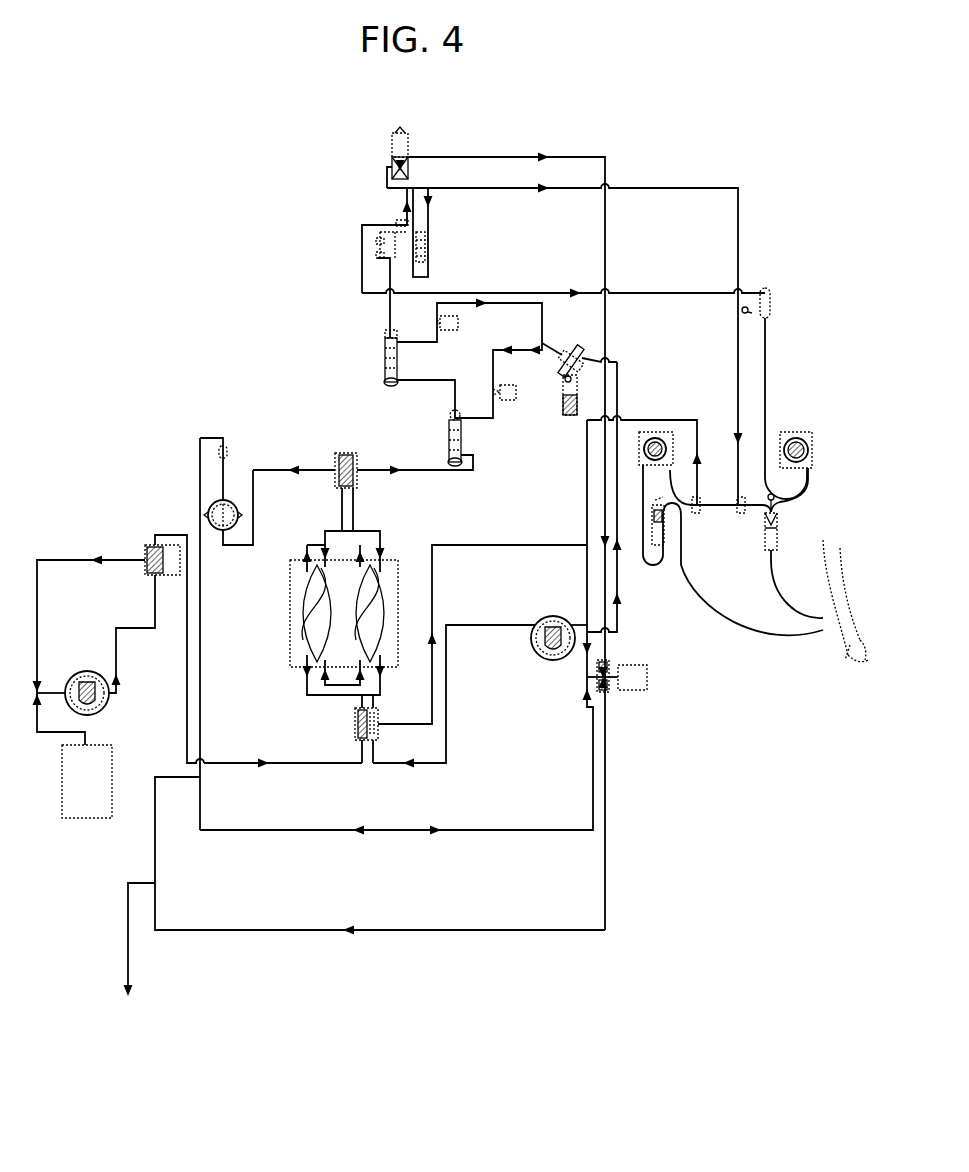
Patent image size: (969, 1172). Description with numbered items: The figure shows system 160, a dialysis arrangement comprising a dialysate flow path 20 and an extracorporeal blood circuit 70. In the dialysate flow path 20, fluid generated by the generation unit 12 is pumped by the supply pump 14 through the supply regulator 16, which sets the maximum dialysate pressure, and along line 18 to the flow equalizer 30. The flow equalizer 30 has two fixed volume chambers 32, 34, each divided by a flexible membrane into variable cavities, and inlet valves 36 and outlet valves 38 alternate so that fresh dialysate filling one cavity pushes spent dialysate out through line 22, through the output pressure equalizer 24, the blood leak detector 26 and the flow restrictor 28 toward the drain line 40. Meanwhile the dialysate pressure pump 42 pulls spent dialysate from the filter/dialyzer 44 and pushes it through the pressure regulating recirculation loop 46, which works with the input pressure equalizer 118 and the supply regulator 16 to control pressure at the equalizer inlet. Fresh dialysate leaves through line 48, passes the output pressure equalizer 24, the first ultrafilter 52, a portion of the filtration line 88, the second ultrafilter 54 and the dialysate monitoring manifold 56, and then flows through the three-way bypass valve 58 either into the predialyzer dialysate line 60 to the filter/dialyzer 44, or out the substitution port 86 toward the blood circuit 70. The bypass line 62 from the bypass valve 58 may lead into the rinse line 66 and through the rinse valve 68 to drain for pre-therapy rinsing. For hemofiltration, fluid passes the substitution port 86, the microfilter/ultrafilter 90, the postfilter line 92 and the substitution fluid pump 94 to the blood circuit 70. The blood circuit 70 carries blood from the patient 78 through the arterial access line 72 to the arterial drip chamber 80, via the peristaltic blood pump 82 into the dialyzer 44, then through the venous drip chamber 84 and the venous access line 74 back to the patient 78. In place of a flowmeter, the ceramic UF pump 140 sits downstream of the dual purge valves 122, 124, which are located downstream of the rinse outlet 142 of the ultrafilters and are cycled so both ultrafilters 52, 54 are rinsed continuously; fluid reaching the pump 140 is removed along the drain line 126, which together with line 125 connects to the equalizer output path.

The generation unit 12 is at (85, 822).
The supply pump 14 is at (92, 673).
The supply regulator 16 is at (165, 543).
The line 18 is at (305, 770).
The dialysate flow path 20 is at (256, 346).
The line 22 is at (340, 512).
The output pressure equalizer 24 is at (332, 455).
The blood leak detector 26 is at (228, 500).
The flow restrictor 28 is at (225, 438).
The flow equalizer 30 is at (316, 627).
The fixed volume chamber 32 is at (388, 585).
The fixed volume chamber 34 is at (298, 622).
The inlet valves 36 is at (308, 680).
The outlet valves 38 is at (305, 552).
The drain line 40 is at (140, 882).
The dialysate pressure pump 42 is at (538, 622).
The filter/dialyzer 44 is at (710, 510).
The pressure regulating recirculation loop 46 is at (398, 727).
The line 48 is at (432, 472).
The first ultrafilter 52 is at (465, 440).
The second ultrafilter 54 is at (385, 362).
The dialysate monitoring manifold 56 is at (413, 272).
The three-way bypass valve 58 is at (390, 162).
The predialyzer dialysate line 60 is at (640, 191).
The bypass line 62 is at (480, 155).
The rinse line 66 is at (608, 805).
The rinse valve 68 is at (648, 683).
The blood circuit 70 is at (694, 639).
The arterial access line 72 is at (818, 632).
The venous access line 74 is at (788, 590).
The patient 78 is at (833, 580).
The arterial drip chamber 80 is at (660, 557).
The peristaltic blood pump 82 is at (672, 455).
The venous drip chamber 84 is at (780, 540).
The substitution port 86 is at (382, 233).
The filtration line 88 is at (668, 292).
The microfilter/ultrafilter 90 is at (766, 286).
The postfilter line 92 is at (770, 380).
The substitution fluid pump 94 is at (812, 430).
The input pressure equalizer 118 is at (355, 740).
The purge valve 122 is at (514, 393).
The purge valve 124 is at (462, 323).
The line 125 is at (203, 692).
The drain line 126 is at (620, 403).
The ceramic UF pump 140 is at (568, 415).
The rinse outlet 142 is at (384, 335).
The system 160 is at (802, 138).